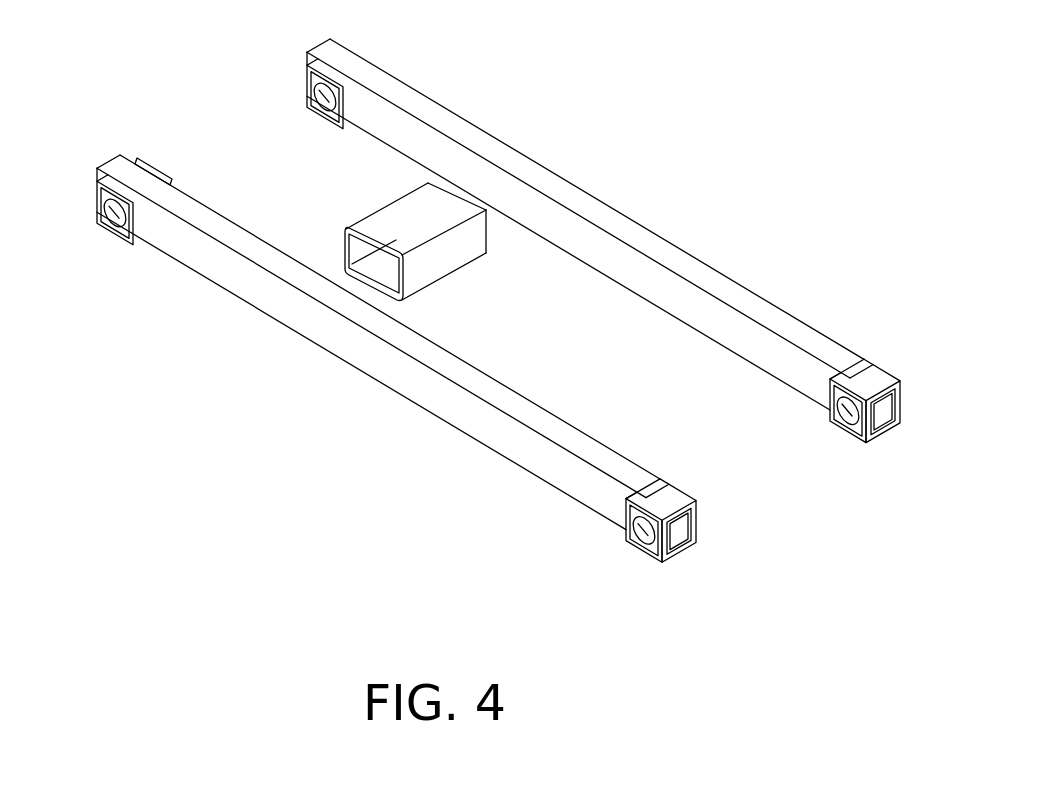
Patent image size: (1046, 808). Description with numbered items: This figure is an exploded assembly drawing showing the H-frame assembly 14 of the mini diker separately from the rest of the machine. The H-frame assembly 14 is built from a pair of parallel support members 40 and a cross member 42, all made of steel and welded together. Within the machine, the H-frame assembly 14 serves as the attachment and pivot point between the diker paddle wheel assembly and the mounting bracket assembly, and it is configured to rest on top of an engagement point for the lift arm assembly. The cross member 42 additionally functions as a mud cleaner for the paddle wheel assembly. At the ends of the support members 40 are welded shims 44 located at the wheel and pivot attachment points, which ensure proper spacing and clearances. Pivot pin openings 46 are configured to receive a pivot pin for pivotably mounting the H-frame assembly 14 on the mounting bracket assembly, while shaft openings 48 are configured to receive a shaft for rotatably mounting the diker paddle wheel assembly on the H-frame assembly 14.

The H-frame assembly 14 is at (663, 57).
The parallel support members 40 is at (736, 281).
The cross member 42 is at (440, 268).
The welded shims 44 is at (462, 341).
The pivot pin openings 46 is at (320, 117).
The shaft openings 48 is at (636, 540).